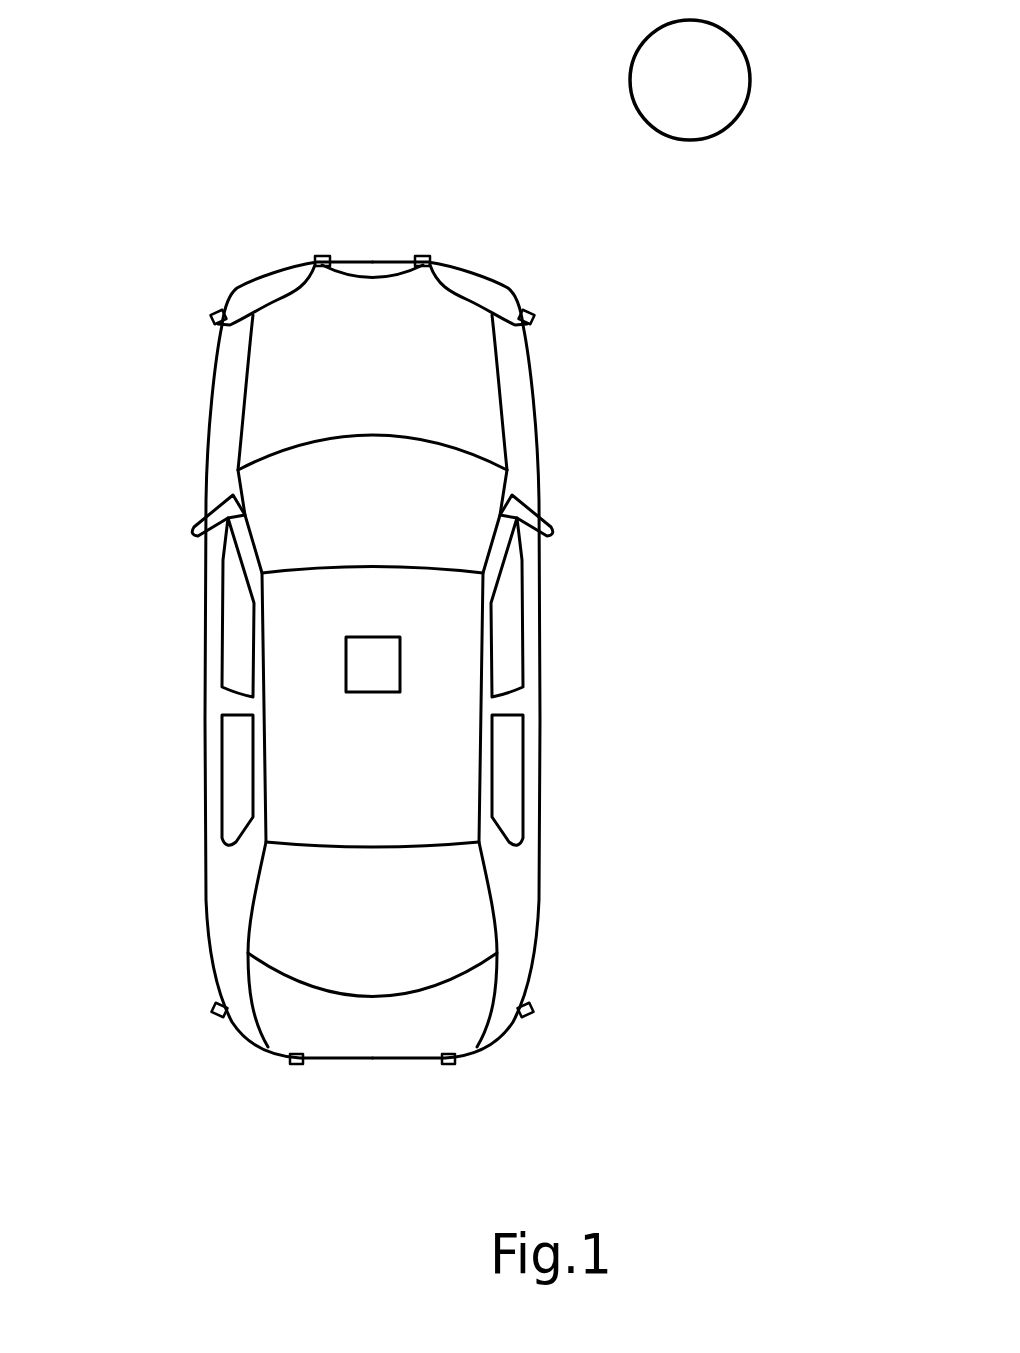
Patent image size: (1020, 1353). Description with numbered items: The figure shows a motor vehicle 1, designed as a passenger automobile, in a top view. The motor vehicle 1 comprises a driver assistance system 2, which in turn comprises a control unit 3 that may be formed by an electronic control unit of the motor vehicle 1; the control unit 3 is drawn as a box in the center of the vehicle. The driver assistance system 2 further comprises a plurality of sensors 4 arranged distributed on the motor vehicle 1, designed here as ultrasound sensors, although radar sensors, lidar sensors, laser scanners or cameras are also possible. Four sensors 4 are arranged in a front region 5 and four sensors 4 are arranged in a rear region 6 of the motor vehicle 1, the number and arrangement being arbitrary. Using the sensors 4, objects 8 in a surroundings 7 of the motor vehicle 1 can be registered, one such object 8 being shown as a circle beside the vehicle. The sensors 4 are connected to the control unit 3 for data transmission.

The motor vehicle 1 is at (373, 262).
The driver assistance system 2 is at (186, 189).
The control unit 3 is at (400, 658).
The sensors 4 is at (322, 256).
The front region 5 is at (393, 175).
The rear region 6 is at (349, 1096).
The surroundings 7 is at (360, 78).
The objects 8 is at (725, 132).